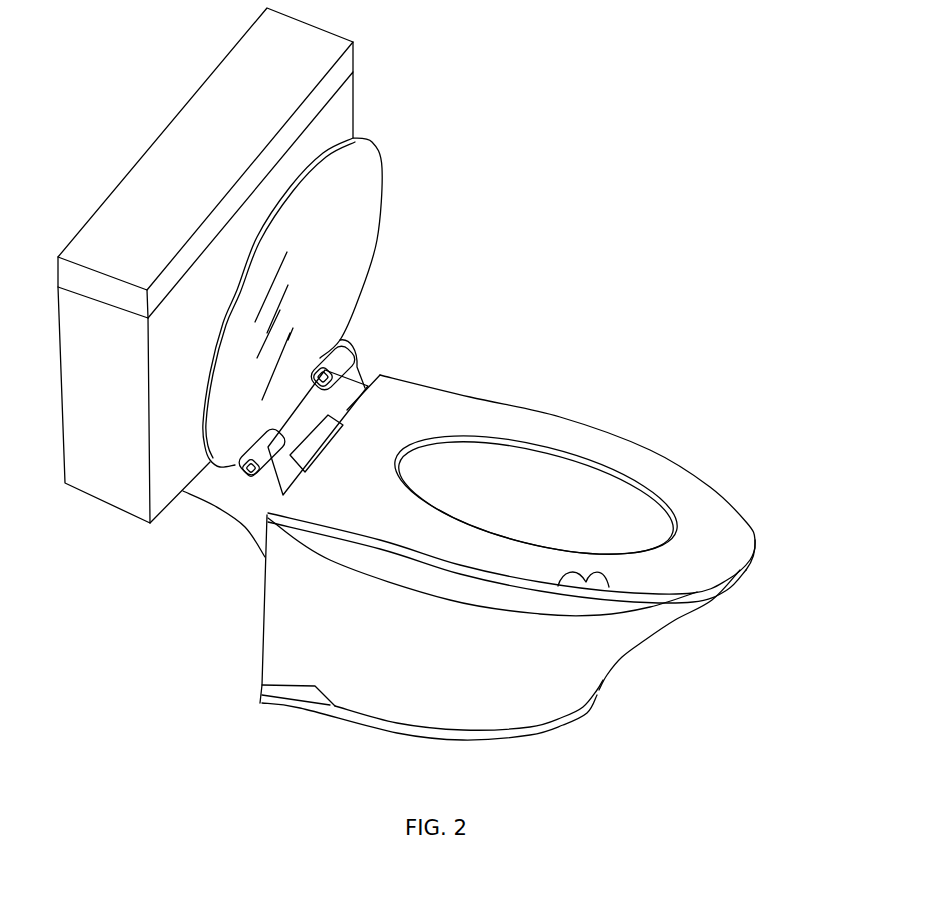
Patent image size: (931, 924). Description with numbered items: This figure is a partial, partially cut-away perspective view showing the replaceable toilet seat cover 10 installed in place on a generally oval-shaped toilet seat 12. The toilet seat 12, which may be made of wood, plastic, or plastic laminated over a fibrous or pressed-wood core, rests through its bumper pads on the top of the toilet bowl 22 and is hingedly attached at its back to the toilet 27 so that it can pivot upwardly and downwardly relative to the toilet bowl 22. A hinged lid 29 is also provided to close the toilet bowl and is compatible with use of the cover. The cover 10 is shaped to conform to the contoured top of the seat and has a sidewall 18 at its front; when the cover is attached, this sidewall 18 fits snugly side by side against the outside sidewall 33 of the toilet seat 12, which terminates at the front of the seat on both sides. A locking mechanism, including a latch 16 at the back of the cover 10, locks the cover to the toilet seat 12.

The replaceable toilet seat cover 10 is at (707, 528).
The toilet seat 12 is at (583, 582).
The latch 16 is at (367, 390).
The sidewall 18 is at (747, 567).
The toilet bowl 22 is at (593, 653).
The toilet 27 is at (110, 463).
The hinged lid 29 is at (353, 223).
The outside sidewall 33 is at (427, 560).